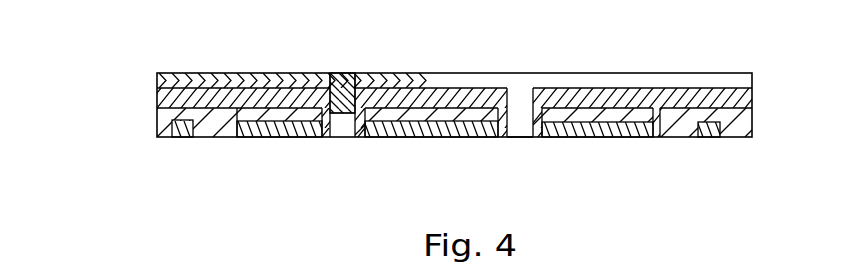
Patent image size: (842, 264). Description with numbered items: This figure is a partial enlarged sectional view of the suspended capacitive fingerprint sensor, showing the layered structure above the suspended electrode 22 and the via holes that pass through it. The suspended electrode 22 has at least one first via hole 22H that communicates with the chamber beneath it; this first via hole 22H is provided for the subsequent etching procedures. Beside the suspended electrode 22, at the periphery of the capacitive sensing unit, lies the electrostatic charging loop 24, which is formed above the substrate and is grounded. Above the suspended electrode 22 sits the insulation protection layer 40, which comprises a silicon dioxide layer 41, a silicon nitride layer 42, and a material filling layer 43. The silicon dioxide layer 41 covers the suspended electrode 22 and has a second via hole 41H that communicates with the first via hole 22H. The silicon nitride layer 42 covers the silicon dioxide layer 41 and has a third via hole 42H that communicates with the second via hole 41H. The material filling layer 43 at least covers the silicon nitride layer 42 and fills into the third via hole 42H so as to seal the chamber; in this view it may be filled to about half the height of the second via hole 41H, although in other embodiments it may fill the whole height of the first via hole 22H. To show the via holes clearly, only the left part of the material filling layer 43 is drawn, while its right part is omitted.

The insulation protection layer 40 is at (95, 64).
The silicon dioxide layer 41 is at (160, 125).
The silicon nitride layer 42 is at (157, 99).
The material filling layer 43 is at (157, 80).
The second via hole 41H is at (518, 113).
The third via hole 42H is at (523, 112).
The first via hole 22H is at (527, 137).
The suspended electrode 22 is at (599, 137).
The electrostatic charging loop 24 is at (704, 137).